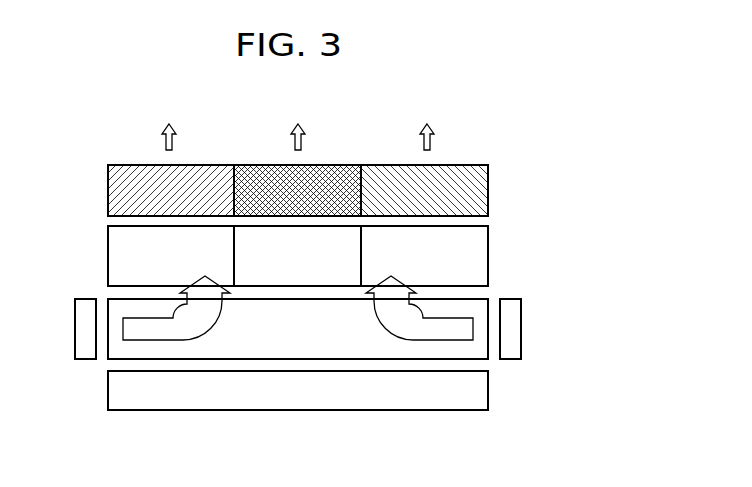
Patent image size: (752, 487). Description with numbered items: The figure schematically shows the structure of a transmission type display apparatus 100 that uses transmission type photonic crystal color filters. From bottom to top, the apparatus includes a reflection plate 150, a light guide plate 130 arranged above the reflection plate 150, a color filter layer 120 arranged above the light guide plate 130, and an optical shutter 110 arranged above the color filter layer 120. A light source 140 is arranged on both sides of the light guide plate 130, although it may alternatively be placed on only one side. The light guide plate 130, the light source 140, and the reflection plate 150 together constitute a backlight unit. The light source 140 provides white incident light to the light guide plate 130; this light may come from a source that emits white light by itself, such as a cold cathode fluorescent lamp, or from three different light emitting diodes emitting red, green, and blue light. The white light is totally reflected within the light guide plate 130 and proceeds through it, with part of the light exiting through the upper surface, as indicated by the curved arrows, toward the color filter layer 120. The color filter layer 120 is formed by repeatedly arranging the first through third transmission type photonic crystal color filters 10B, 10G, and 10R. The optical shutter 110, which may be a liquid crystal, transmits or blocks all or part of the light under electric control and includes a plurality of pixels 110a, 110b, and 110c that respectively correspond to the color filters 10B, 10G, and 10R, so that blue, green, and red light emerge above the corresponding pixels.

The transmission type display apparatus 100 is at (88, 134).
The optical shutter 110 is at (335, 170).
The pixel 110a is at (204, 178).
The pixel 110b is at (341, 178).
The pixel 110c is at (474, 178).
The first transmission type photonic crystal color filter 10B is at (113, 256).
The second transmission type photonic crystal color filter 10G is at (295, 280).
The third transmission type photonic crystal color filter 10R is at (483, 240).
The color filter layer 120 is at (309, 338).
The light guide plate 130 is at (485, 352).
The light source 140 is at (78, 331).
The reflection plate 150 is at (470, 401).